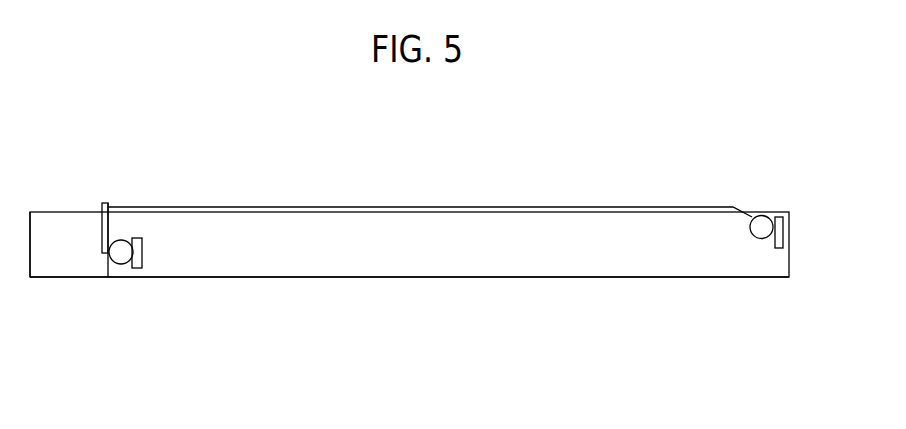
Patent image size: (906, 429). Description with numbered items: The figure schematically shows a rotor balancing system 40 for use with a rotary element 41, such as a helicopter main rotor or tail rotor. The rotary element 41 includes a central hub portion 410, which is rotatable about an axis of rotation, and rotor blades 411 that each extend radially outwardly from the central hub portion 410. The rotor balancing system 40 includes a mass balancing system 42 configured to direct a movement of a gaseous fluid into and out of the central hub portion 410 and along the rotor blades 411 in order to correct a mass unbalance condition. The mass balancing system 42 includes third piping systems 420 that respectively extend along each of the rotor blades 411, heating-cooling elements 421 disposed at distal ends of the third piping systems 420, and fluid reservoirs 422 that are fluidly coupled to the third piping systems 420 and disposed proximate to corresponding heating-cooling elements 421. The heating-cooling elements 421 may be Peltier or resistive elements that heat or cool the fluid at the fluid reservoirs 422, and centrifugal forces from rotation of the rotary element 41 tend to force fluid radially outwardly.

The rotor balancing system 40 is at (287, 326).
The rotary element 41 is at (340, 282).
The mass balancing system 42 is at (342, 200).
The central hub portion 410 is at (93, 278).
The rotor blades 411 is at (484, 278).
The third piping systems 420 is at (571, 257).
The heating-cooling elements 421 is at (137, 238).
The fluid reservoirs 422 is at (120, 241).